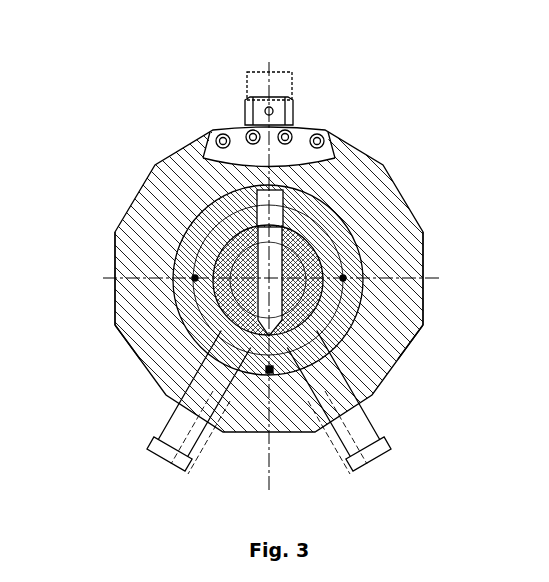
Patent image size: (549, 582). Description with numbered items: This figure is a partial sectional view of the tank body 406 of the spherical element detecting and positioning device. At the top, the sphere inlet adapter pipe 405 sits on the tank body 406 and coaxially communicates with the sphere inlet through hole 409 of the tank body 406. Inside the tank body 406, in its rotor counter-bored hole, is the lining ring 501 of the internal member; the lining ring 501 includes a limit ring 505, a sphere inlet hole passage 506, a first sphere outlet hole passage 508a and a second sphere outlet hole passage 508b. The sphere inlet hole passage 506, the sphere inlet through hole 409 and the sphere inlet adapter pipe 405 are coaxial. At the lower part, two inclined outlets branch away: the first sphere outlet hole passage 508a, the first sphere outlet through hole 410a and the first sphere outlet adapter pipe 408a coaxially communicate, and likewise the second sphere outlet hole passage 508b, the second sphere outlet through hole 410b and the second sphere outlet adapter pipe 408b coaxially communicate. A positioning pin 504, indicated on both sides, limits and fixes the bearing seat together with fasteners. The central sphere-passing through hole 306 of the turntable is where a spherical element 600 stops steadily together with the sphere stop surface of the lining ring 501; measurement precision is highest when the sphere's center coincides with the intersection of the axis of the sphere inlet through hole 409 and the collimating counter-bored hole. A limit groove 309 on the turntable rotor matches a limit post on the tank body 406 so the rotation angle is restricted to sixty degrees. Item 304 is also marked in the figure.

The sphere inlet adapter pipe 405 is at (280, 90).
The tank body 406 is at (353, 163).
The sphere inlet through hole 409 is at (280, 181).
The top flange 304 is at (238, 155).
The sphere inlet hole passage 506 is at (213, 180).
The limit groove 309 is at (165, 208).
The positioning pin 504 is at (115, 243).
The limit ring 505 is at (340, 186).
The lining ring 501 is at (350, 240).
The sphere-passing through hole 306 is at (400, 236).
The first sphere outlet hole passage 508a is at (120, 324).
The second sphere outlet hole passage 508b is at (423, 315).
The first sphere outlet through hole 410a is at (160, 380).
The second sphere outlet through hole 410b is at (393, 370).
The first sphere outlet adapter pipe 408a is at (150, 442).
The second sphere outlet adapter pipe 408b is at (370, 437).
The spherical element 600 is at (265, 376).